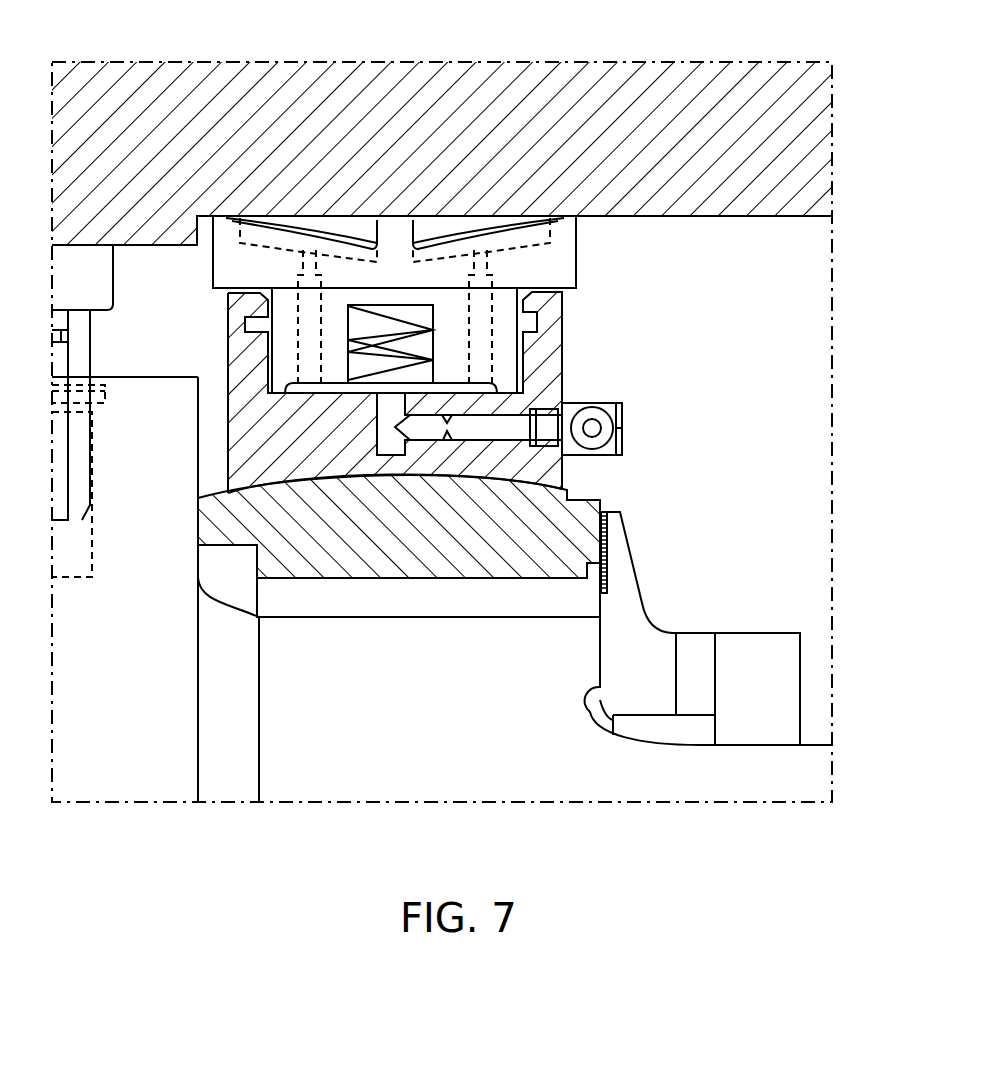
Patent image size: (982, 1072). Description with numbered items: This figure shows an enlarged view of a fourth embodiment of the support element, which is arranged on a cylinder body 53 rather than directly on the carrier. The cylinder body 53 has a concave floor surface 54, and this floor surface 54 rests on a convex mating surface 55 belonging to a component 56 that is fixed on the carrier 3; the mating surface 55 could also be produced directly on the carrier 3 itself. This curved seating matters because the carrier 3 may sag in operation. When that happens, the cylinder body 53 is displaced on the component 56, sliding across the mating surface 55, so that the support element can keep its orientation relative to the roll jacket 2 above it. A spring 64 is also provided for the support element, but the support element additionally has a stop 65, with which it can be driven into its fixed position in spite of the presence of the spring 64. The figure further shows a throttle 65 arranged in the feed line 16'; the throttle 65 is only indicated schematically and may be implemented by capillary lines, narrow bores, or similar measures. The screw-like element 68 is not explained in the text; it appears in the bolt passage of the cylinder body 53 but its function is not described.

The roll jacket 2 is at (596, 73).
The carrier 3 is at (568, 790).
The stop 65 is at (507, 384).
The spring 64 is at (433, 331).
The cylinder body 53 is at (552, 368).
The concave floor surface 54 is at (557, 472).
The component 56 is at (608, 517).
The adjusting screw 68 is at (447, 416).
The feed line 16' is at (521, 511).
The convex mating surface 55 is at (471, 437).